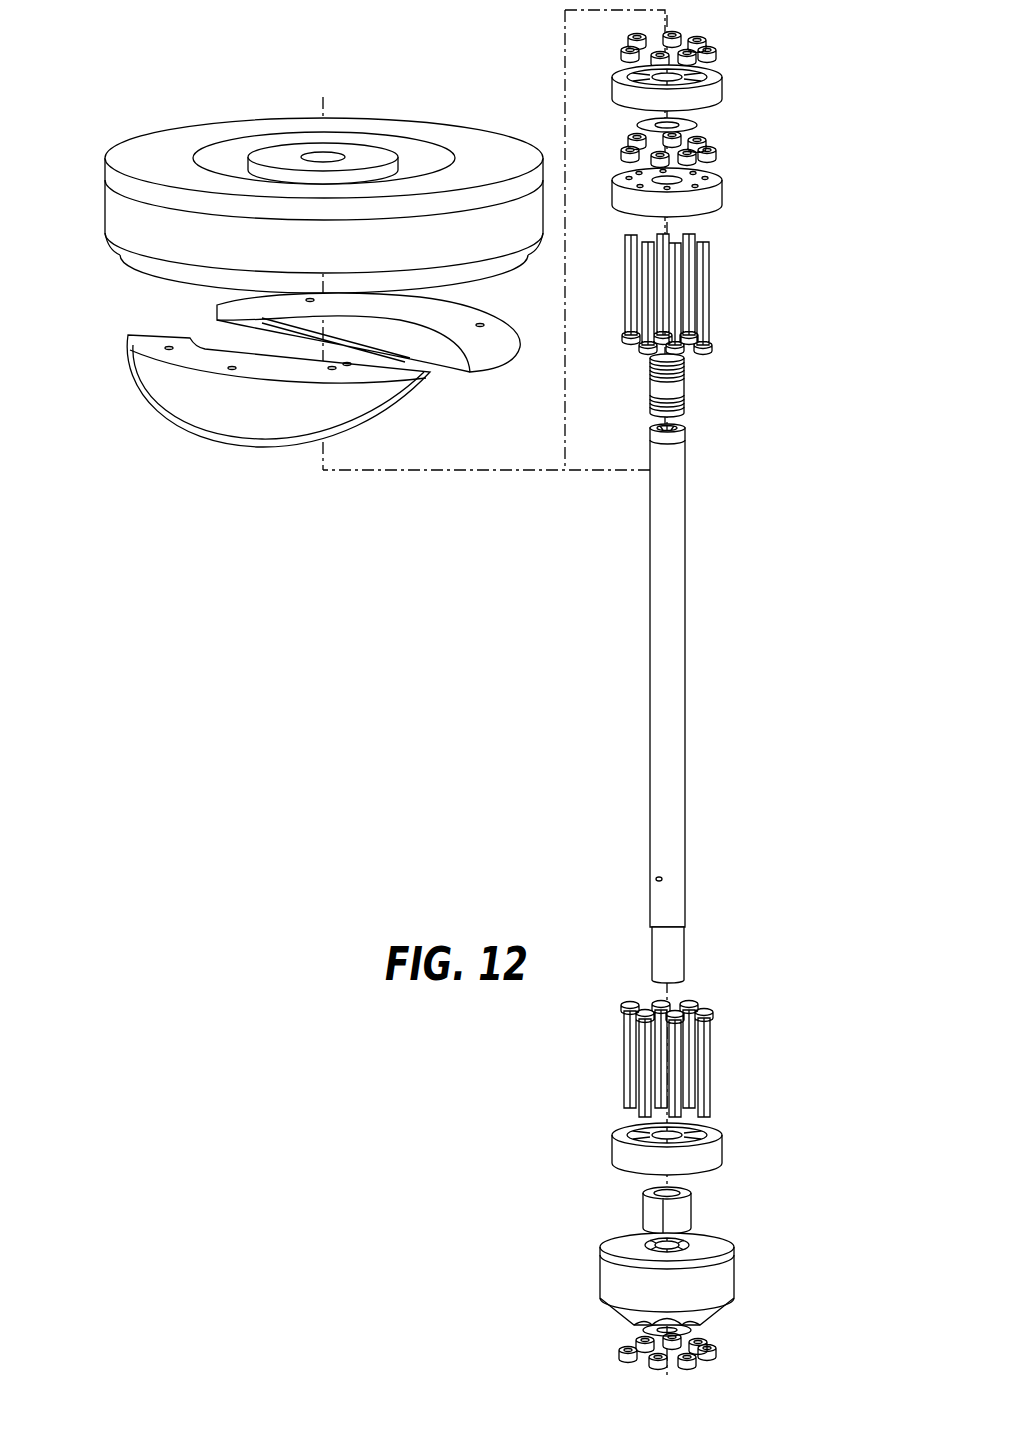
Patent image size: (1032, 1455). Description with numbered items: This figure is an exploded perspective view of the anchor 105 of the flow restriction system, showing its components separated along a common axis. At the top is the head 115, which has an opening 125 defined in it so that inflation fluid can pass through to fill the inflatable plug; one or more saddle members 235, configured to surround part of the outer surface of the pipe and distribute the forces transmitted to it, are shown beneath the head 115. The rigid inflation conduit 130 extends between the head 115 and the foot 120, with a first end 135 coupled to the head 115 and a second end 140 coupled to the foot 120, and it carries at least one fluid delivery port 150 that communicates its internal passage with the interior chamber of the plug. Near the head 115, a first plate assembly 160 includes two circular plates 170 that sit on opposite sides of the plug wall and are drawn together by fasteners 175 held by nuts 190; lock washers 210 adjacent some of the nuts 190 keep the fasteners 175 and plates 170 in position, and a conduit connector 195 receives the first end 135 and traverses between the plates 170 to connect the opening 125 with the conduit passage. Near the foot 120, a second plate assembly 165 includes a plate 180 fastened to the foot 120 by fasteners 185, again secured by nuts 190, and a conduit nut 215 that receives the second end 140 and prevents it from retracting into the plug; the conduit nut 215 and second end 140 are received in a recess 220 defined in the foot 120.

The anchor 105 is at (509, 84).
The head 115 is at (115, 213).
The opening 125 is at (313, 155).
The saddle members 235 is at (472, 366).
The first plate assembly 160 is at (826, 183).
The nut 190 is at (702, 42).
The plates 170 is at (716, 92).
The lock washers 210 is at (705, 158).
The fasteners 175 is at (712, 285).
The conduit connector 195 is at (676, 388).
The first end 135 is at (690, 416).
The inflation conduit 130 is at (672, 660).
The fluid delivery port 150 is at (655, 878).
The second end 140 is at (687, 957).
The fasteners 185 is at (712, 1043).
The second plate assembly 165 is at (575, 1155).
The plate 180 is at (716, 1153).
The conduit nut 215 is at (648, 1203).
The foot 120 is at (613, 1270).
The recess 220 is at (682, 1241).